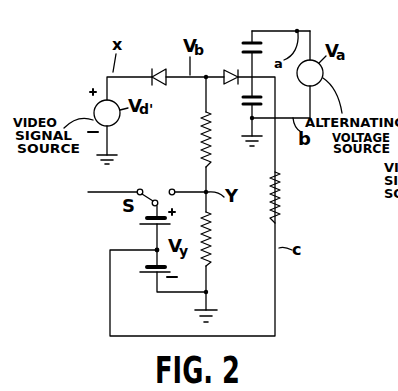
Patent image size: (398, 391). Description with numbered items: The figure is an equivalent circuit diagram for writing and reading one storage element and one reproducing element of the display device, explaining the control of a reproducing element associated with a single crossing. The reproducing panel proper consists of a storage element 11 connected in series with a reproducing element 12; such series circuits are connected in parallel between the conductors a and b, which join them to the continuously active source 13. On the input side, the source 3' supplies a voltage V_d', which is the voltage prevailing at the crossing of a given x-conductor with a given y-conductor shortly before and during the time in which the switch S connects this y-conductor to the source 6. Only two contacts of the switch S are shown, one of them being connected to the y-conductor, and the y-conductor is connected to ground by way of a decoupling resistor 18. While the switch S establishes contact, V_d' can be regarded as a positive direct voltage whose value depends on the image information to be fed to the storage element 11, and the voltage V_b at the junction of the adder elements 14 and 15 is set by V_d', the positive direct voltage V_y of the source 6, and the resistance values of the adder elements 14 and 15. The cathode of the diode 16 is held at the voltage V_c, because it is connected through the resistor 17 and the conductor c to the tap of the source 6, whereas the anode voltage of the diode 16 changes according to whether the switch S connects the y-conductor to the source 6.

The source 3' is at (117, 127).
The source 6 is at (156, 246).
The storage element 11 is at (242, 100).
The reproducing element 12 is at (262, 50).
The continuously active source 13 is at (316, 84).
The adder element 14 is at (156, 68).
The adder element 15 is at (203, 143).
The diode 16 is at (229, 68).
The resistor 17 is at (281, 187).
The decoupling resistor 18 is at (211, 246).